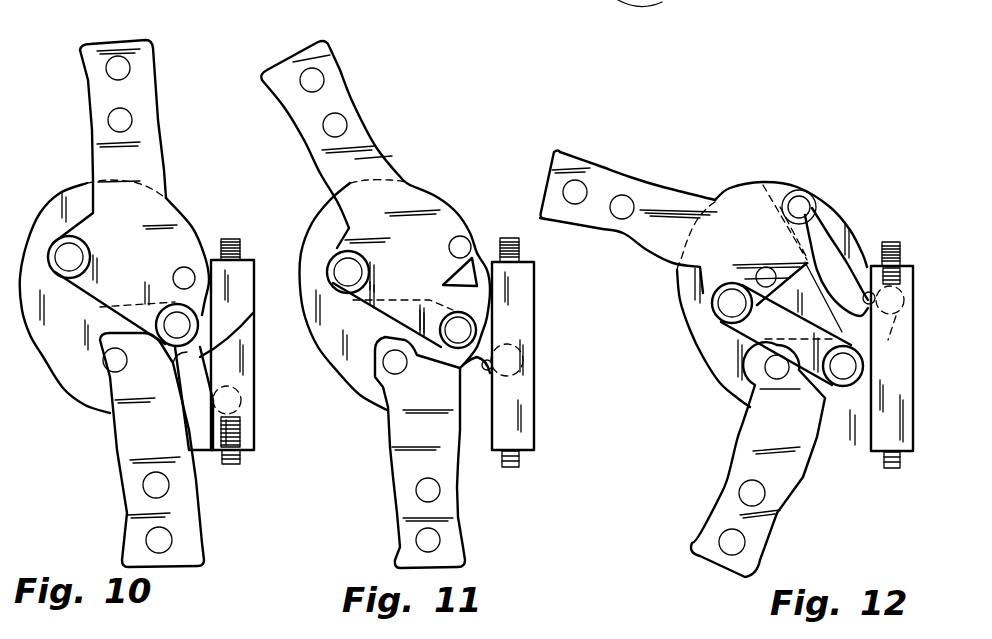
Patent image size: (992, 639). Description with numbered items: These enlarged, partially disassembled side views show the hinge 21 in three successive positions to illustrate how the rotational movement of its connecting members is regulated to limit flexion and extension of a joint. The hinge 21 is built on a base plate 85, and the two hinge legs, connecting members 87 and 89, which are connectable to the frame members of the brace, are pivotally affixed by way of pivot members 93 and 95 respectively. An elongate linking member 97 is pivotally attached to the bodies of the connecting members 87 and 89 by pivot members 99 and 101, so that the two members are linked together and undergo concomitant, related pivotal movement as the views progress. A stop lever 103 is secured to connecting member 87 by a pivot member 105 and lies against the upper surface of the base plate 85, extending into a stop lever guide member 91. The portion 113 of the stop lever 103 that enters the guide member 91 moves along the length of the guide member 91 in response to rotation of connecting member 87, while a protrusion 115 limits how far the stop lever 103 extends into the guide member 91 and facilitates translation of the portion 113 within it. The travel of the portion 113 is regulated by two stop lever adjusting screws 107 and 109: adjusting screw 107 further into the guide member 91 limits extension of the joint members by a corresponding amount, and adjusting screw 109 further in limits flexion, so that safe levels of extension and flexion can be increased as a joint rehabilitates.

In FIG. 10, the hinge 21 is at (63, 388).
In FIG. 11, the hinge 21 is at (425, 177).
In FIG. 12, the hinge 21 is at (738, 180).
In FIG. 10, the base plate 85 is at (60, 207).
In FIG. 11, the base plate 85 is at (340, 350).
In FIG. 12, the base plate 85 is at (772, 294).
In FIG. 10, the connecting member 87 is at (90, 96).
In FIG. 11, the connecting member 87 is at (302, 120).
In FIG. 12, the connecting member 87 is at (650, 192).
In FIG. 10, the connecting member 89 is at (138, 450).
In FIG. 11, the connecting member 89 is at (468, 452).
In FIG. 12, the connecting member 89 is at (773, 459).
In FIG. 10, the stop lever guide member 91 is at (264, 356).
In FIG. 11, the stop lever guide member 91 is at (556, 365).
In FIG. 12, the stop lever guide member 91 is at (873, 366).
In FIG. 12, the pivot member 93 is at (764, 272).
In FIG. 10, the pivot member 95 is at (115, 366).
In FIG. 11, the pivot member 95 is at (388, 374).
In FIG. 12, the pivot member 95 is at (770, 372).
In FIG. 10, the linking member 97 is at (138, 289).
In FIG. 11, the linking member 97 is at (380, 284).
In FIG. 12, the linking member 97 is at (748, 286).
In FIG. 10, the pivot member 99 is at (76, 247).
In FIG. 11, the pivot member 99 is at (336, 262).
In FIG. 12, the pivot member 99 is at (725, 303).
In FIG. 10, the pivot member 101 is at (176, 336).
In FIG. 11, the pivot member 101 is at (453, 338).
In FIG. 12, the pivot member 101 is at (838, 373).
In FIG. 10, the stop lever 103 is at (247, 315).
In FIG. 11, the stop lever 103 is at (472, 292).
In FIG. 12, the stop lever 103 is at (825, 240).
In FIG. 10, the pivot member 105 is at (187, 265).
In FIG. 11, the pivot member 105 is at (460, 236).
In FIG. 12, the pivot member 105 is at (800, 196).
In FIG. 10, the stop lever adjusting screw 107 is at (232, 464).
In FIG. 11, the stop lever adjusting screw 107 is at (520, 463).
In FIG. 12, the stop lever adjusting screw 107 is at (900, 469).
In FIG. 10, the stop lever adjusting screw 109 is at (231, 238).
In FIG. 11, the stop lever adjusting screw 109 is at (521, 249).
In FIG. 12, the stop lever adjusting screw 109 is at (892, 240).
In FIG. 10, the portion of stop lever 113 is at (243, 403).
In FIG. 11, the portion of stop lever 113 is at (524, 354).
In FIG. 12, the portion of stop lever 113 is at (896, 322).
In FIG. 10, the protrusion 115 is at (160, 399).
In FIG. 11, the protrusion 115 is at (492, 371).